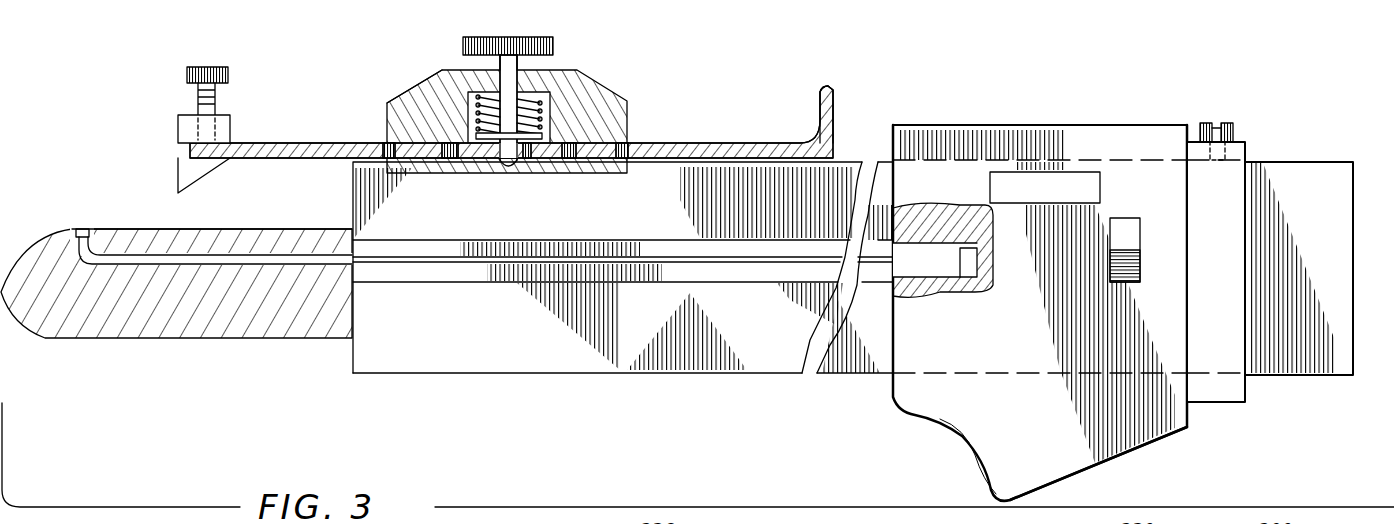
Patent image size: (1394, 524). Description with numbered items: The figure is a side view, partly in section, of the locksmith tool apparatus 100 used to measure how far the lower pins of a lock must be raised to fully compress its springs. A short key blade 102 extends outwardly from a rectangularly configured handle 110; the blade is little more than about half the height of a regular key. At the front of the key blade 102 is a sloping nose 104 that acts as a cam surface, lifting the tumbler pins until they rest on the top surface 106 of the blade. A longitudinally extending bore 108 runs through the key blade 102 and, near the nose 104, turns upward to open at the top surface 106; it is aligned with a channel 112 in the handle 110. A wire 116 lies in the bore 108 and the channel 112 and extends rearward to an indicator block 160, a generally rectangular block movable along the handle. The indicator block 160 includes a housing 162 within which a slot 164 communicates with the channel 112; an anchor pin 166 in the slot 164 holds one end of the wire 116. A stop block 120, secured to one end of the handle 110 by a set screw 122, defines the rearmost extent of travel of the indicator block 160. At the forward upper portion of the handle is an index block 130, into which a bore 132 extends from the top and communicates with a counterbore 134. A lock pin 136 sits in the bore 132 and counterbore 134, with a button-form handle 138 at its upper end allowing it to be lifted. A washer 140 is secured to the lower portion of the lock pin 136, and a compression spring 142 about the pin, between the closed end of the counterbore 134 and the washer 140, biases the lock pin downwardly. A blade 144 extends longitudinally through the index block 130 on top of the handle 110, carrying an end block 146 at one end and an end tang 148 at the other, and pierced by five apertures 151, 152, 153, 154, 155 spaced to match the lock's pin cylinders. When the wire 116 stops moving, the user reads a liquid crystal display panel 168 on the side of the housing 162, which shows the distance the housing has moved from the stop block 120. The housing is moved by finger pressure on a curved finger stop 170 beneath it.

The locksmith tool apparatus 100 is at (918, 84).
The key blade 102 is at (167, 327).
The sloping nose 104 is at (50, 242).
The top surface 106 is at (159, 229).
The bore 108 is at (253, 250).
The handle 110 is at (503, 362).
The channel 112 is at (672, 272).
The wire 116 is at (432, 262).
The stop block 120 is at (1218, 393).
The set screw 122 is at (1240, 124).
The index block 130 is at (605, 102).
The bore 132 is at (515, 70).
The counterbore 134 is at (548, 108).
The lock pin 136 is at (500, 60).
The handle 138 is at (556, 47).
The washer 140 is at (482, 133).
The compression spring 142 is at (442, 77).
The blade 144 is at (262, 143).
The end block 146 is at (178, 170).
The end tang 148 is at (833, 98).
The aperture 151 is at (622, 160).
The aperture 152 is at (566, 160).
The aperture 153 is at (508, 166).
The aperture 154 is at (455, 158).
The aperture 155 is at (385, 142).
The indicator block 160 is at (1140, 455).
The housing 162 is at (1023, 130).
The slot 164 is at (918, 272).
The anchor pin 166 is at (970, 253).
The liquid crystal display panel 168 is at (1093, 190).
The finger stop 170 is at (1042, 477).